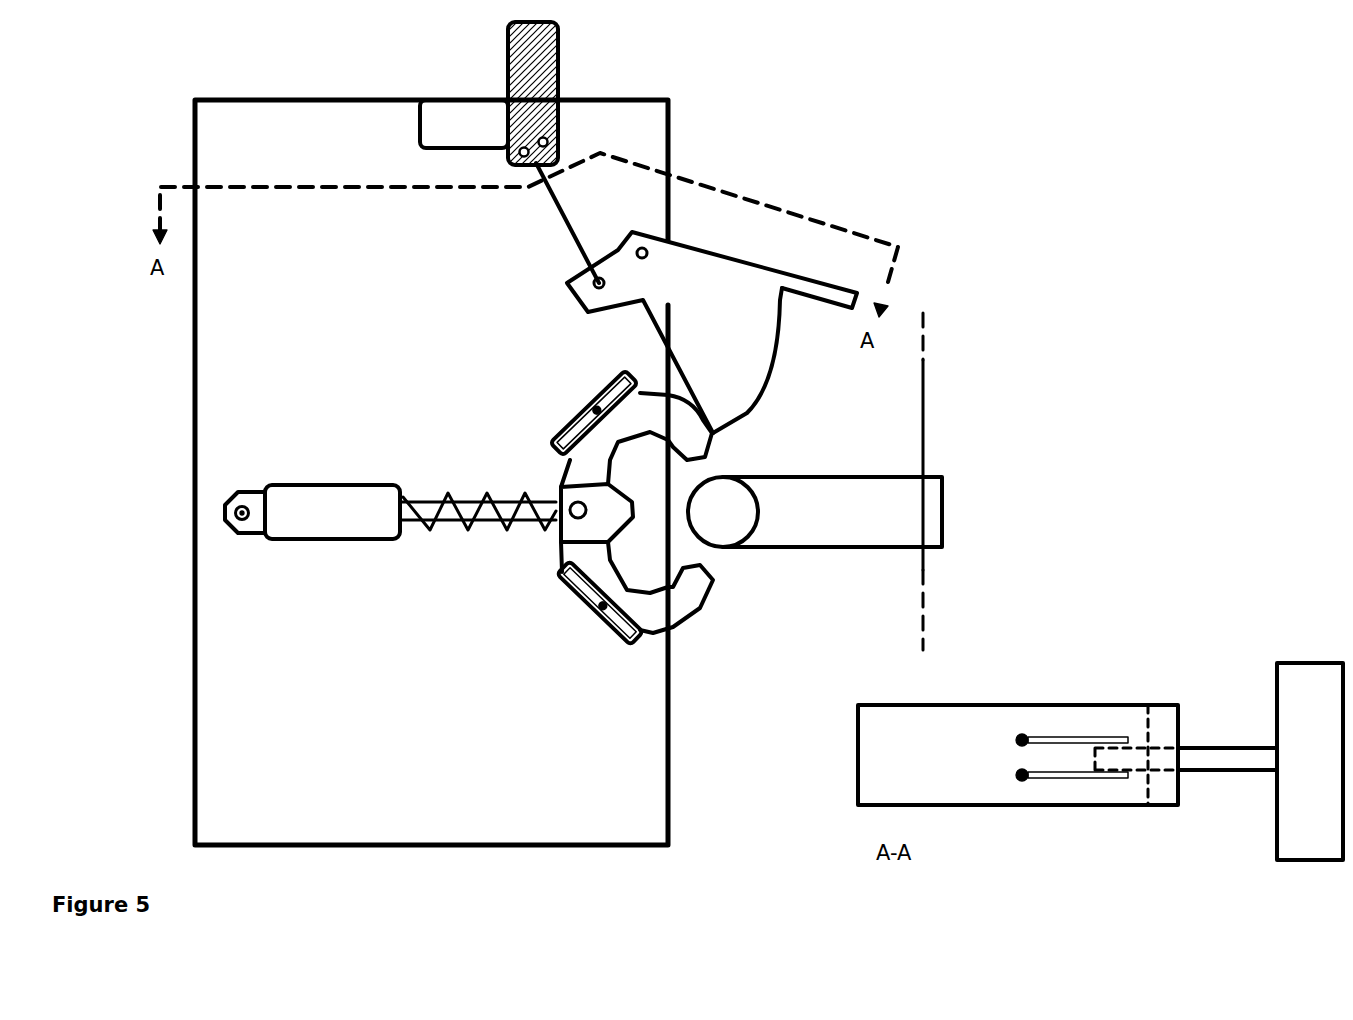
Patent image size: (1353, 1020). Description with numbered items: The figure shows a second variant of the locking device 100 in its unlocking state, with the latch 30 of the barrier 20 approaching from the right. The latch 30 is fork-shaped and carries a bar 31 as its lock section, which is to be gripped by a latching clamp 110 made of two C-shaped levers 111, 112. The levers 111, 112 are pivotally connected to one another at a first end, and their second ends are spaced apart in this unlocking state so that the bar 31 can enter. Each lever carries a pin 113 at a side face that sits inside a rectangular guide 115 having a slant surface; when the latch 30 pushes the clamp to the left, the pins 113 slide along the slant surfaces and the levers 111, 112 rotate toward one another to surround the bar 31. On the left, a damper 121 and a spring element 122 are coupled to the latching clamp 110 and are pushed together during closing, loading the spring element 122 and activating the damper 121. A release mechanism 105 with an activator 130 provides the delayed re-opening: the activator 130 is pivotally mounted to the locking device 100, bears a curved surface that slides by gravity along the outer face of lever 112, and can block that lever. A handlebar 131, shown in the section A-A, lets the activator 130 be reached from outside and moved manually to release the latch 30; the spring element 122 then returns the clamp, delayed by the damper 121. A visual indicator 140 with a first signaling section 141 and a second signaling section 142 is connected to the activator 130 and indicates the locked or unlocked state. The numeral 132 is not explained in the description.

The locking device 100 is at (195, 332).
The release mechanism 105 is at (487, 415).
The latching clamp 110 is at (527, 556).
The lever 111 is at (696, 590).
The lever 112 is at (692, 447).
The pin 113 is at (580, 420).
The guide 115 is at (622, 386).
The damper 121 is at (298, 505).
The spring element 122 is at (430, 555).
The activator 130 is at (700, 275).
The handlebar 131 is at (893, 267).
The lever arm 132 is at (735, 383).
The visual indicator 140 is at (518, 86).
The first signaling section 141 is at (437, 125).
The second signaling section 142 is at (522, 58).
The barrier 20 is at (925, 420).
The latch 30 is at (880, 548).
The bar 31 is at (727, 525).